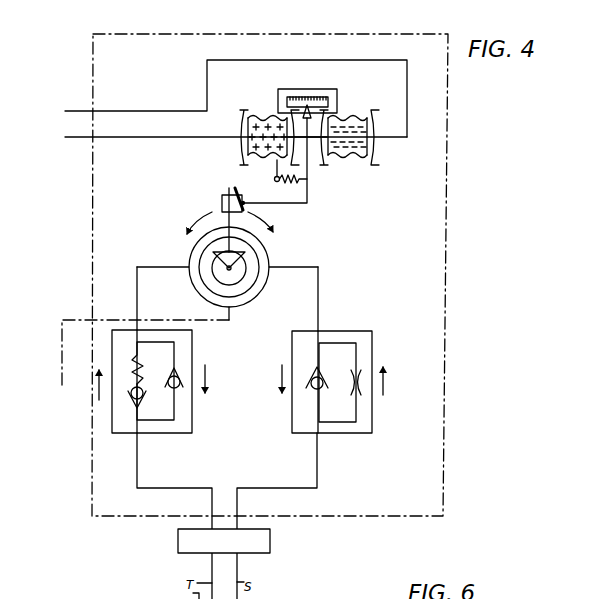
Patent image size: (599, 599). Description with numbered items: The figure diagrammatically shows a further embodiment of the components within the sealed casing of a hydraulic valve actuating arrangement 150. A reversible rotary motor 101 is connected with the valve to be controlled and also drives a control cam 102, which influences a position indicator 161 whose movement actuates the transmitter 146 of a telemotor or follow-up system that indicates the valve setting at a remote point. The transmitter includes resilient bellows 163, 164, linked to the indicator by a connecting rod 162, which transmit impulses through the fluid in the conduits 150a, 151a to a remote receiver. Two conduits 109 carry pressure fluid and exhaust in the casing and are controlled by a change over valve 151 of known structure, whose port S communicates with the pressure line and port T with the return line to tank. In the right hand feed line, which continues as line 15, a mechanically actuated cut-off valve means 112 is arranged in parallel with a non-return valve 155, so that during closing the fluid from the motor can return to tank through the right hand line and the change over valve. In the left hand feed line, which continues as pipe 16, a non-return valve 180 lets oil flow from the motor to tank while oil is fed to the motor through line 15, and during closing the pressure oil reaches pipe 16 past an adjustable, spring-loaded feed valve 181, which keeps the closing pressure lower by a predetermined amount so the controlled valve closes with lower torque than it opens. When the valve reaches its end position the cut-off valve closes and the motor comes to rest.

The hydraulic valve actuating arrangement 150 is at (443, 378).
The conduit 150a is at (132, 108).
The conduit 151a is at (137, 141).
The transmitter 146 is at (268, 82).
The resilient bellows 164 is at (260, 118).
The resilient bellows 163 is at (352, 117).
The connecting rod 162 is at (317, 138).
The position indicator 161 is at (315, 194).
The control cam 102 is at (222, 200).
The rotary motor 101 is at (270, 255).
The pipe 16 is at (137, 292).
The non-return valve 180 is at (178, 384).
The adjustable feed valve 181 is at (129, 368).
The right hand line 15 is at (318, 312).
The non-return valve 155 is at (312, 390).
The mechanically actuated cut-off valve means 112 is at (353, 366).
The conduits 109 is at (215, 495).
The change over valve 151 is at (256, 549).